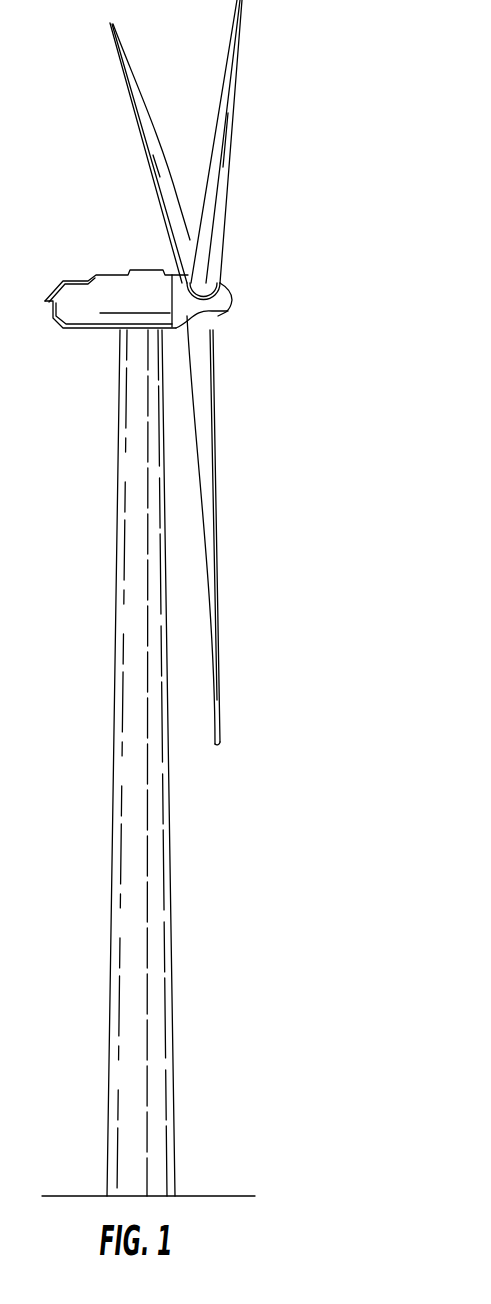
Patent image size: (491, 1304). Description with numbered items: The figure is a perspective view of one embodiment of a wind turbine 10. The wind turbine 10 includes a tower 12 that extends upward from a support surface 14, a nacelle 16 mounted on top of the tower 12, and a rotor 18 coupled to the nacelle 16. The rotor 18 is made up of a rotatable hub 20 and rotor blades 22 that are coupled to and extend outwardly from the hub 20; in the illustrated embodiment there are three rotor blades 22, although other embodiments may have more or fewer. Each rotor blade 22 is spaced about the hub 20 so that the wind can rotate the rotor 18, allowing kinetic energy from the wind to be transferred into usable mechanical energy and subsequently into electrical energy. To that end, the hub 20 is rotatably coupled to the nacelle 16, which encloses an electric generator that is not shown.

The wind turbine 10 is at (362, 136).
The tower 12 is at (153, 833).
The support surface 14 is at (88, 1193).
The nacelle 16 is at (85, 311).
The rotor 18 is at (235, 275).
The rotatable hub 20 is at (232, 302).
The rotor blade 22 is at (140, 92).